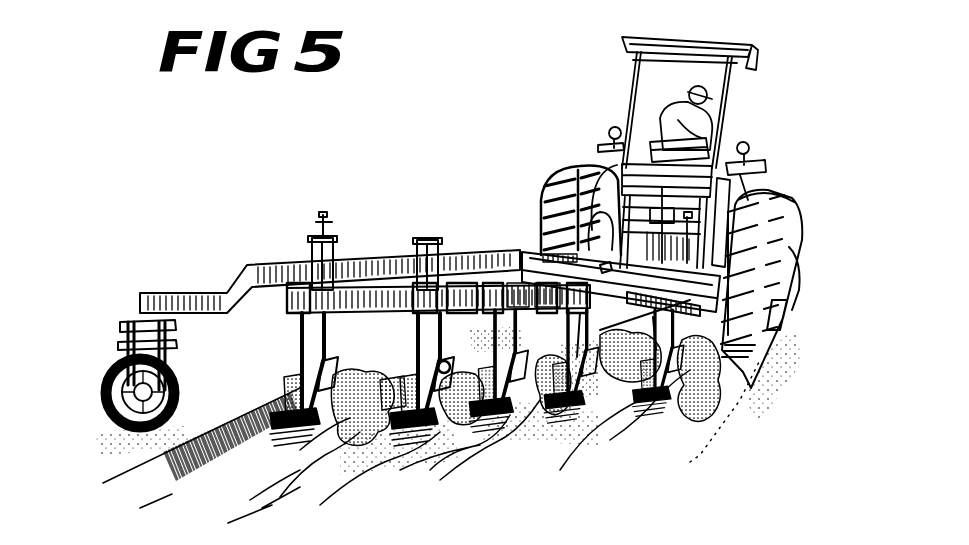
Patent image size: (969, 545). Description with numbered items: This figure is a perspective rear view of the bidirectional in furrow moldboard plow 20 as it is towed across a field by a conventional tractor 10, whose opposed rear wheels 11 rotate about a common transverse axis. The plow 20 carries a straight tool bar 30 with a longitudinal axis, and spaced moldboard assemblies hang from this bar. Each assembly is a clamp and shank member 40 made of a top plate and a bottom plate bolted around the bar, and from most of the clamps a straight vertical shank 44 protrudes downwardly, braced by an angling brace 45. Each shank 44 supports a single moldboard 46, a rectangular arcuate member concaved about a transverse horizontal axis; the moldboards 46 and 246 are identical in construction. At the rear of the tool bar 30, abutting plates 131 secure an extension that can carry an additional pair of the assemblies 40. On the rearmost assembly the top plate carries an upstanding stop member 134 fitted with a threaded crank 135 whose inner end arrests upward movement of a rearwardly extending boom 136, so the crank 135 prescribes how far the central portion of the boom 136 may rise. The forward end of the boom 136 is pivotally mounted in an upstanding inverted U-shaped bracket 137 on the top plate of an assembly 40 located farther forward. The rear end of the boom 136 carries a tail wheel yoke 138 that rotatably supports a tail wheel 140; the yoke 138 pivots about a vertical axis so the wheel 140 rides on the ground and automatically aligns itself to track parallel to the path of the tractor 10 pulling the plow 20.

The tractor 10 is at (542, 181).
The rear wheels 11 is at (568, 168).
The bidirectional in furrow moldboard plow 20 is at (525, 245).
The tool bar 30 is at (562, 408).
The clamp and shank member 40 is at (305, 262).
The shank 44 is at (300, 338).
The angling brace 45 is at (333, 330).
The moldboard 46 is at (323, 440).
The abutting plates 131 is at (488, 308).
The stop member 134 is at (338, 250).
The threaded crank 135 is at (322, 220).
The boom 136 is at (245, 268).
The inverted U-shaped bracket 137 is at (440, 262).
The tail wheel yoke 138 is at (122, 325).
The tail wheel 140 is at (100, 387).
The moldboard 246 is at (637, 406).